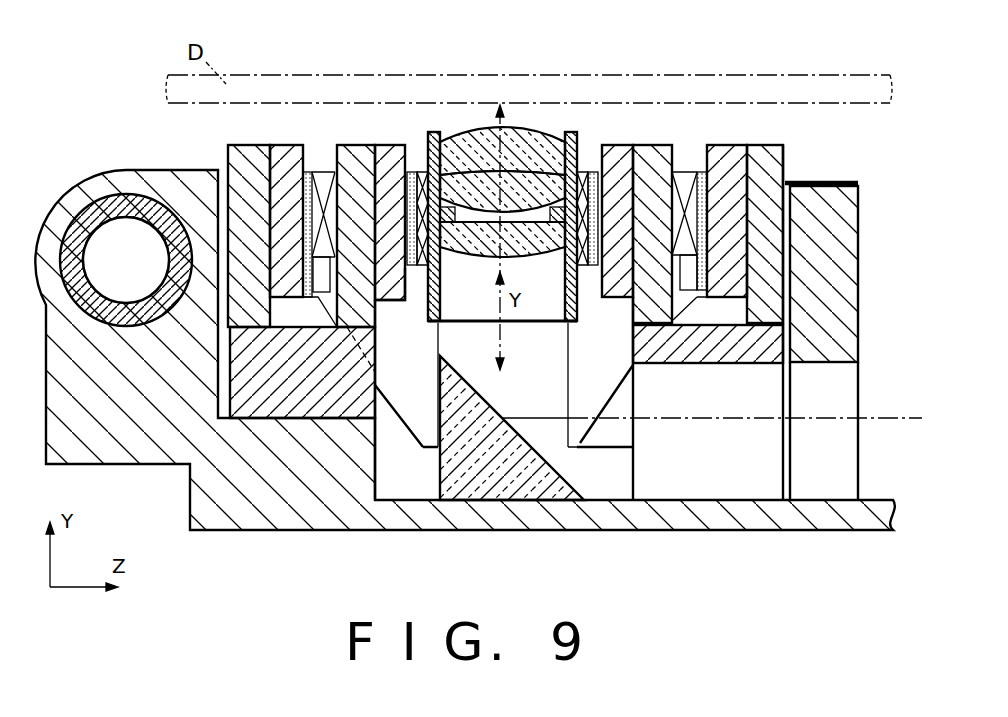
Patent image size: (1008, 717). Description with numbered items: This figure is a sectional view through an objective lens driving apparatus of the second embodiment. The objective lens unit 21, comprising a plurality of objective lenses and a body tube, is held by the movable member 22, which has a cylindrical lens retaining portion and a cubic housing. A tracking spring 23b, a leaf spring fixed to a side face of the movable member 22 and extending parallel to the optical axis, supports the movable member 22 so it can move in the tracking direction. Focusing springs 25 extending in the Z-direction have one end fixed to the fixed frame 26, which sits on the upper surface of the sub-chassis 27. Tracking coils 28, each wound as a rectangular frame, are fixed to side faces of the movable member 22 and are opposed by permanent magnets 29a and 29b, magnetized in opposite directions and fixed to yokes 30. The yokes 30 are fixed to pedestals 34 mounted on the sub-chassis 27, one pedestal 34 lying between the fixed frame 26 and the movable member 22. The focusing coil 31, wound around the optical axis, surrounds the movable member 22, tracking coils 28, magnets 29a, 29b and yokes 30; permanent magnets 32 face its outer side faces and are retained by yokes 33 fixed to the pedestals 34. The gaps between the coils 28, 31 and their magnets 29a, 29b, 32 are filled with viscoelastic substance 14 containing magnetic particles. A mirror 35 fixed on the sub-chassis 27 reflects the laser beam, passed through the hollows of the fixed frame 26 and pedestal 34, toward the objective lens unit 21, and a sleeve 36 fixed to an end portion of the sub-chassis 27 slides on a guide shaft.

The viscoelastic substance 14 is at (308, 176).
The objective lens unit 21 is at (520, 134).
The movable member 22 is at (448, 132).
The tracking spring 23b is at (551, 371).
The focusing spring 25 is at (832, 182).
The fixed frame 26 is at (858, 300).
The sub-chassis 27 is at (352, 508).
The tracking coil 28 is at (436, 134).
The permanent magnet 29a is at (388, 160).
The permanent magnet 29b is at (614, 162).
The yoke 30 is at (352, 160).
The focusing coil 31 is at (325, 178).
The permanent magnet 32 is at (286, 156).
The yoke 33 is at (236, 158).
The pedestal 34 is at (288, 395).
The mirror 35 is at (490, 480).
The sleeve 36 is at (128, 205).